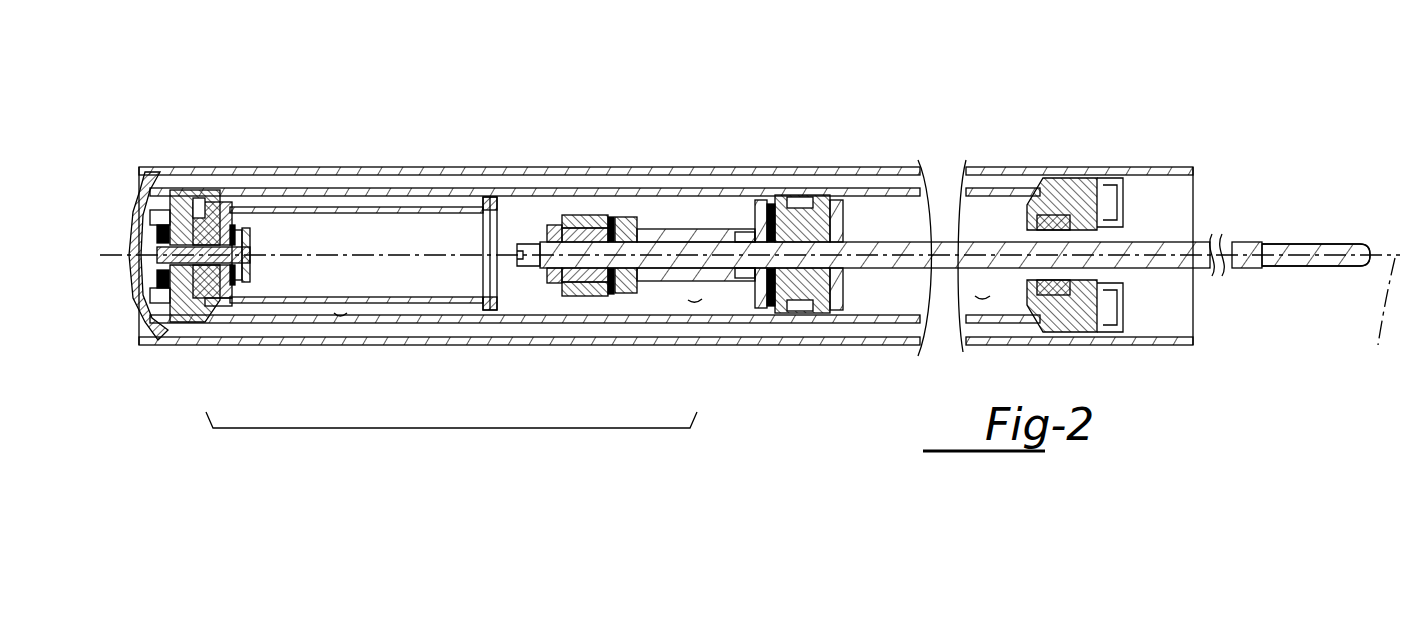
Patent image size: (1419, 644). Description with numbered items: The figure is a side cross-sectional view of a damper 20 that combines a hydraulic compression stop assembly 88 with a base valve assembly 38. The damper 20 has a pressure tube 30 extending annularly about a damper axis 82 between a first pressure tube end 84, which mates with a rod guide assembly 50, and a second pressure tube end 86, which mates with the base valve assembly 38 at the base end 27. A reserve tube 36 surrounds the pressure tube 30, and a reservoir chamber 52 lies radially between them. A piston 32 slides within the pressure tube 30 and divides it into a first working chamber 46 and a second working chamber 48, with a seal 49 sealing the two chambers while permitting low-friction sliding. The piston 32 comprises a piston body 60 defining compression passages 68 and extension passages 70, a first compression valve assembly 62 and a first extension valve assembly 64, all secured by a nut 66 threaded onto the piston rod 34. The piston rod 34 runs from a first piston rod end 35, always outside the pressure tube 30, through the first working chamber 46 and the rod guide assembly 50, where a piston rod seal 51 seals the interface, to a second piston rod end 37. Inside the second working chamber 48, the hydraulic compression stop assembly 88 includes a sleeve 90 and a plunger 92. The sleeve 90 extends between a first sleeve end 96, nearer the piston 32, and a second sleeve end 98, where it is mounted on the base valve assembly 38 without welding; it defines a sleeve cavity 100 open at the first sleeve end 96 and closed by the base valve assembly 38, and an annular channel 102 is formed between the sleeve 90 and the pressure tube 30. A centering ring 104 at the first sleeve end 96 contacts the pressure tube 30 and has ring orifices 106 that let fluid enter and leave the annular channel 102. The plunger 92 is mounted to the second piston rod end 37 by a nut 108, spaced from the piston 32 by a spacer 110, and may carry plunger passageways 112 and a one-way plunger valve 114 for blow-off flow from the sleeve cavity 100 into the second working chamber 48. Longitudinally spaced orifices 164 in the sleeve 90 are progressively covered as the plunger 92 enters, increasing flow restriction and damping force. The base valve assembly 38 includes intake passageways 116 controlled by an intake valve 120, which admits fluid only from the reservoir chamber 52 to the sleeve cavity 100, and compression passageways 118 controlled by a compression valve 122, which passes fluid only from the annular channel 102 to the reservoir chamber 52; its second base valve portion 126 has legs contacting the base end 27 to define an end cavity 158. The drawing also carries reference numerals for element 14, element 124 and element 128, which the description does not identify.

The vehicle suspension component 14 is at (320, 4).
The damper 20 is at (969, 67).
The base end 27 is at (158, 212).
The pressure tube 30 is at (690, 341).
The piston 32 is at (846, 213).
The piston rod 34 is at (1183, 240).
The first piston rod end 35 is at (1352, 248).
The reserve tube 36 is at (740, 172).
The second piston rod end 37 is at (545, 306).
The base valve assembly 38 is at (259, 262).
The first working chamber 46 is at (983, 300).
The second working chamber 48 is at (700, 318).
The seal 49 is at (806, 197).
The rod guide assembly 50 is at (1085, 178).
The piston rod seal 51 is at (1052, 214).
The reservoir chamber 52 is at (387, 326).
The piston body 60 is at (818, 196).
The first compression valve assembly 62 is at (838, 305).
The first extension valve assembly 64 is at (742, 200).
The nut 66 is at (740, 234).
The compression passages 68 is at (778, 305).
The extension passages 70 is at (772, 202).
The damper axis 82 is at (1381, 314).
The first pressure tube end 84 is at (1005, 190).
The second pressure tube end 86 is at (195, 200).
The hydraulic compression stop assembly 88 is at (451, 435).
The sleeve 90 is at (322, 296).
The plunger 92 is at (560, 296).
The first sleeve end 96 is at (460, 305).
The second sleeve end 98 is at (242, 302).
The sleeve cavity 100 is at (405, 304).
The annular channel 102 is at (341, 321).
The centering ring 104 is at (495, 310).
The ring orifices 106 is at (490, 200).
The nut 108 is at (533, 230).
The spacer 110 is at (655, 283).
The plunger passageways 112 is at (583, 216).
The plunger valve 114 is at (612, 290).
The intake passageways 116 is at (190, 302).
The compression passageways 118 is at (208, 215).
The intake valve 120 is at (259, 243).
The compression valve 122 is at (160, 286).
The retainer 124 is at (222, 302).
The second base valve portion 126 is at (163, 302).
The pin 128 is at (258, 252).
The end cavity 158 is at (136, 232).
The orifices 164 is at (372, 190).